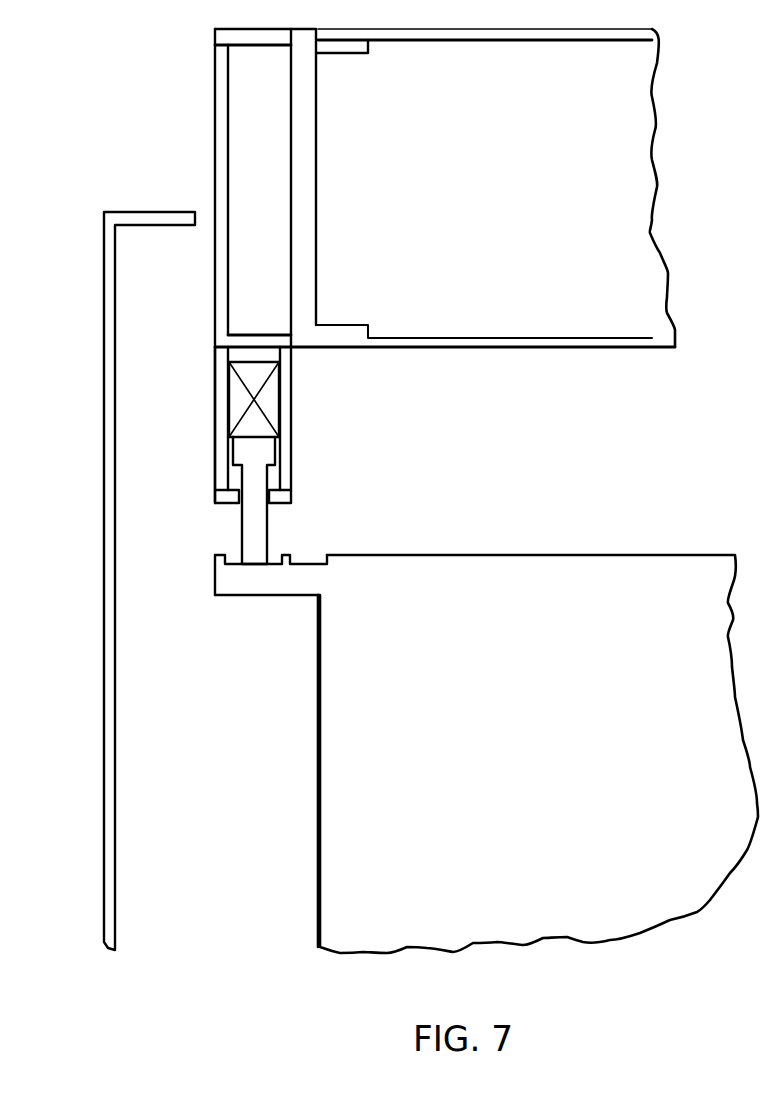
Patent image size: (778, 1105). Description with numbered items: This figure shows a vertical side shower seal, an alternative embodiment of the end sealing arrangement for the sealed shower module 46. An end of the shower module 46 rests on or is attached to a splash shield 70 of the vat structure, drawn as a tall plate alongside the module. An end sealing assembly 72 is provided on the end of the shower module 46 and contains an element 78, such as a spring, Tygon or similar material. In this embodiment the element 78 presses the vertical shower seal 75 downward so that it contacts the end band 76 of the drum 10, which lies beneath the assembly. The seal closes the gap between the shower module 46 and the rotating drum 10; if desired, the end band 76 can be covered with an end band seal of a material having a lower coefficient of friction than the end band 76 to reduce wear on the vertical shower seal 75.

The drum 10 is at (548, 756).
The sealed shower module 46 is at (505, 183).
The splash shield 70 is at (104, 494).
The end sealing assembly 72 is at (215, 387).
The vertical shower seal 75 is at (267, 530).
The end band 76 is at (266, 596).
The element 78 is at (279, 395).